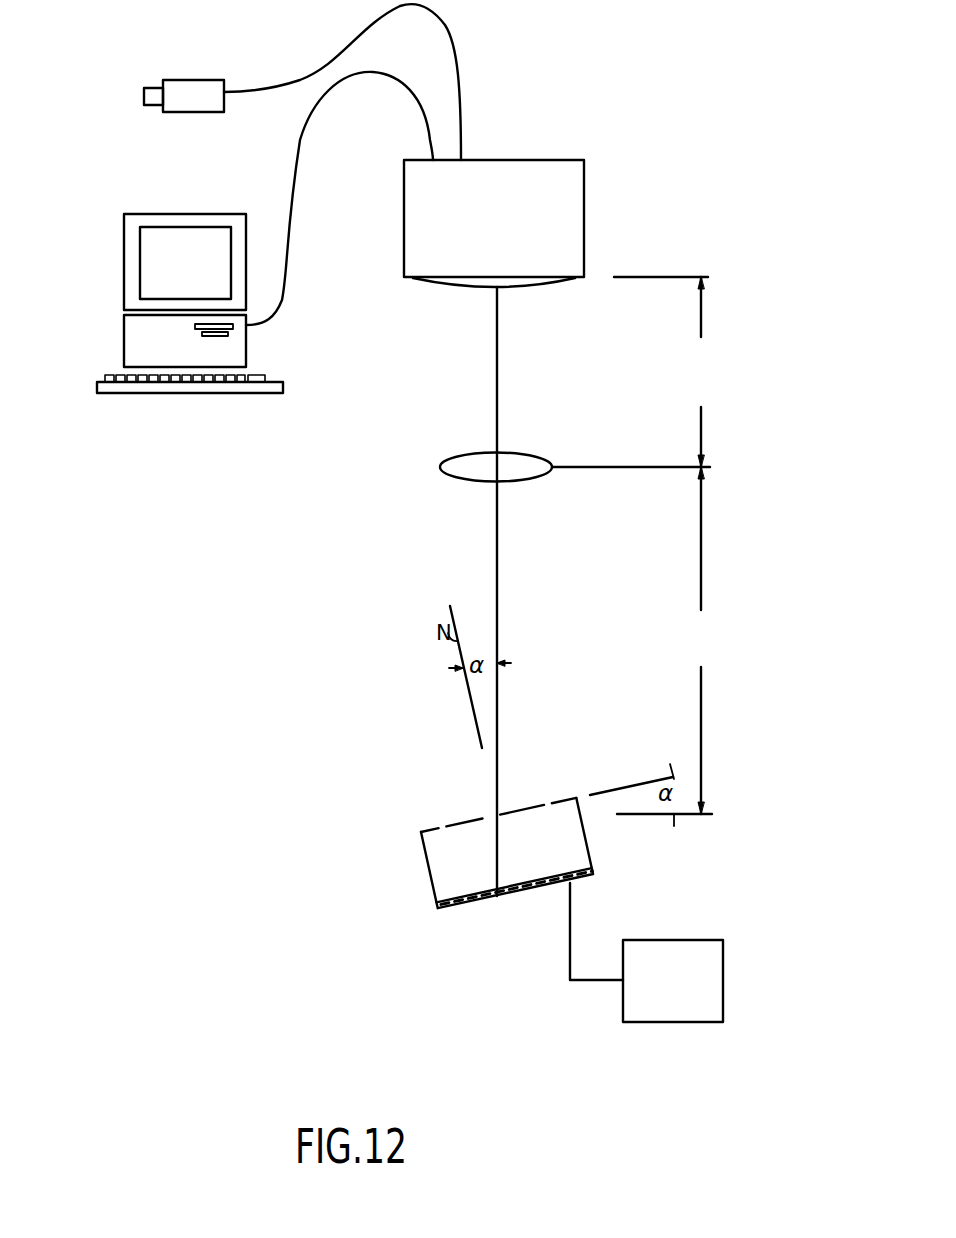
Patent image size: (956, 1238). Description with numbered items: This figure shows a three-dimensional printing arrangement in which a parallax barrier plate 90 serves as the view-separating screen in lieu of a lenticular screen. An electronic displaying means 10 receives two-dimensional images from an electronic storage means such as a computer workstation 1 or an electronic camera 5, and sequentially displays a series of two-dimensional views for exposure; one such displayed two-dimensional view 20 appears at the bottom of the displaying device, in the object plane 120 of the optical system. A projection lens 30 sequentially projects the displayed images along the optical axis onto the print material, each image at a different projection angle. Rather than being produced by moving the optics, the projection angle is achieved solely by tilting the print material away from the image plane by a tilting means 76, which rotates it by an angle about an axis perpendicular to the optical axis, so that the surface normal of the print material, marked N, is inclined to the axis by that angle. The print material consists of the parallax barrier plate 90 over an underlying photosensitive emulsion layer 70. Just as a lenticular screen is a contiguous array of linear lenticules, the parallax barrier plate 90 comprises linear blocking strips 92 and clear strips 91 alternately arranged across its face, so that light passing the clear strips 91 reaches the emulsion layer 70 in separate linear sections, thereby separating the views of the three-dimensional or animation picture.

The computer workstation 1 is at (113, 278).
The electronic camera 5 is at (175, 88).
The electronic displaying means 10 is at (518, 165).
The displayed 2D view 20 is at (443, 283).
The projection lens 30 is at (523, 478).
The photosensitive emulsion layer 70 is at (442, 910).
The tilting means 76 is at (716, 995).
The parallax barrier plate 90 is at (435, 860).
The clear strips 91 is at (443, 825).
The blocking strips 92 is at (527, 770).
The object plane 120 is at (643, 276).